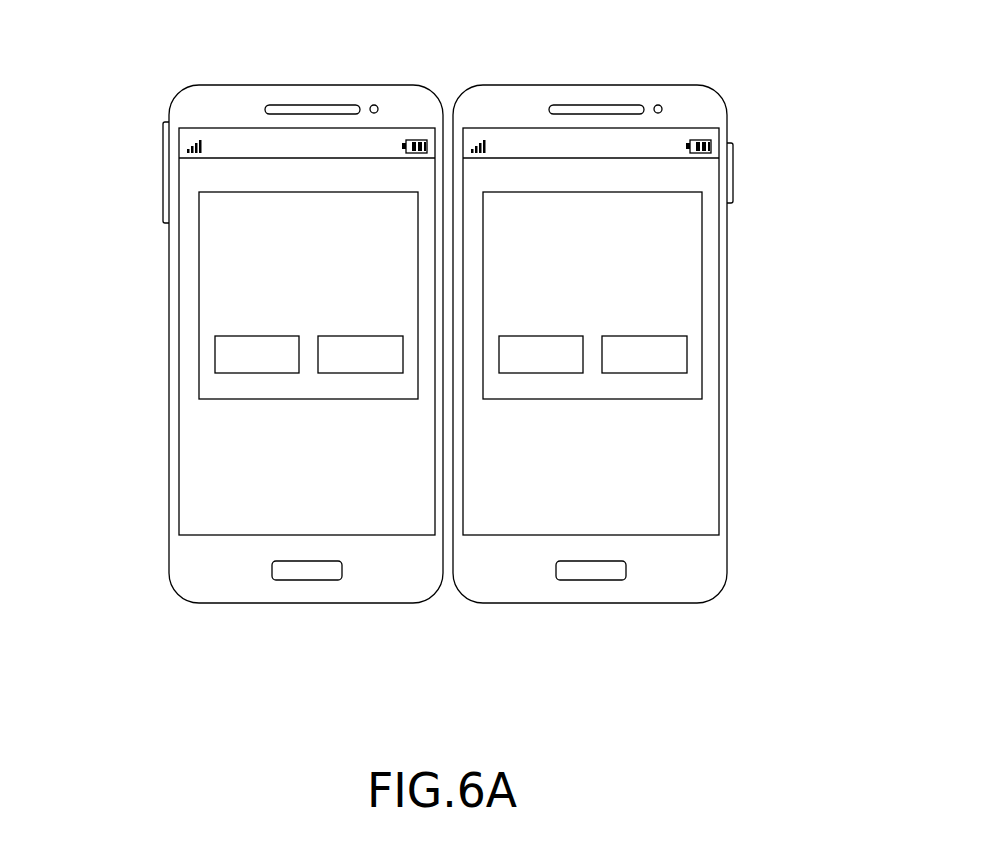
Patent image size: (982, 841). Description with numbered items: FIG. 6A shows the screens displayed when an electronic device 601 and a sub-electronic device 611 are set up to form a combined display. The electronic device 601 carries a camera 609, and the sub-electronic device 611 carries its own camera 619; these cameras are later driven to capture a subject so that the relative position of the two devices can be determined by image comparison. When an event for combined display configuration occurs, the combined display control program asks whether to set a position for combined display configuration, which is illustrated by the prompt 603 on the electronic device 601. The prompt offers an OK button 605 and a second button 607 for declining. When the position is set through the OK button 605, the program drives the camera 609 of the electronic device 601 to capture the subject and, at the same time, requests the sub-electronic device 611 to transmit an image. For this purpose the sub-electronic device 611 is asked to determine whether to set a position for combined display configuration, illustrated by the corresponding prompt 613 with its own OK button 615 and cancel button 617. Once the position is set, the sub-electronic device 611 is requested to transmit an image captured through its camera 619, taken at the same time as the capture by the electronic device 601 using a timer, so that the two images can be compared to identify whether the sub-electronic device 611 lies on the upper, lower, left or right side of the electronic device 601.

The electronic device 601 is at (168, 250).
The position setting prompt 603 is at (220, 390).
The OK button 605 is at (289, 367).
The CANCEL button 607 is at (392, 367).
The camera 609 is at (374, 104).
The sub-electronic device 611 is at (728, 283).
The position setting prompt 613 is at (504, 390).
The OK button 615 is at (573, 367).
The CANCEL button 617 is at (676, 367).
The camera 619 is at (658, 104).